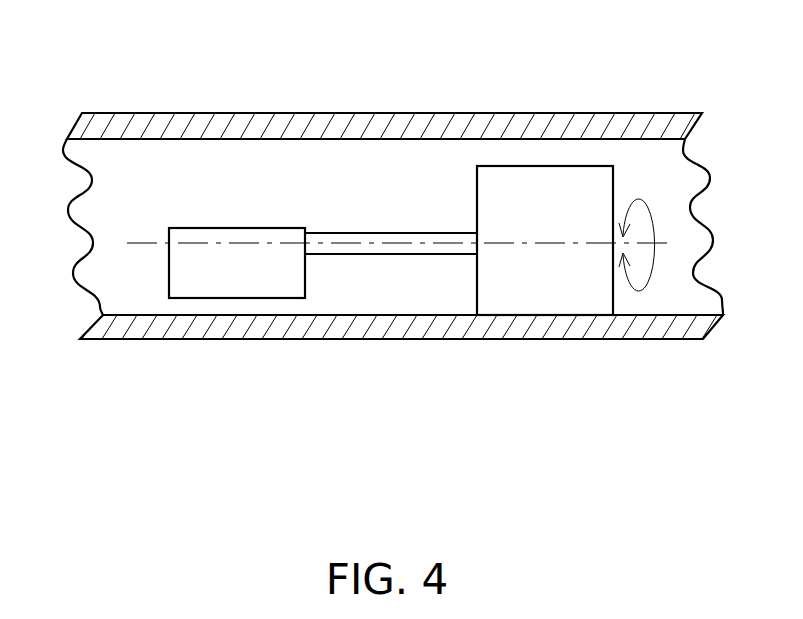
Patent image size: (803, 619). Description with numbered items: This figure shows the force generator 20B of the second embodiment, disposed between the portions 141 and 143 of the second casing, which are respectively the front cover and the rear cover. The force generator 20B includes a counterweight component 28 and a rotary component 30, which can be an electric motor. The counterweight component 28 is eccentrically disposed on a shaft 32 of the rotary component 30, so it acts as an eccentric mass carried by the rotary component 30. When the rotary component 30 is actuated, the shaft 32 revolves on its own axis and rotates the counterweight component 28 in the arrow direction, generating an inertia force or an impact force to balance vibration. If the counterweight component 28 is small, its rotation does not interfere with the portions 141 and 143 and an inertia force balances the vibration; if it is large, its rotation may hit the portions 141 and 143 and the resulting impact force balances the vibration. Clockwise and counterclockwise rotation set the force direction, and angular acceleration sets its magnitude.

The portion of the second casing 141 is at (640, 128).
The portion of the second casing 143 is at (638, 328).
The force generator 20B is at (391, 304).
The counterweight component 28 is at (273, 282).
The rotary component 30 is at (504, 280).
The shaft 32 is at (392, 240).